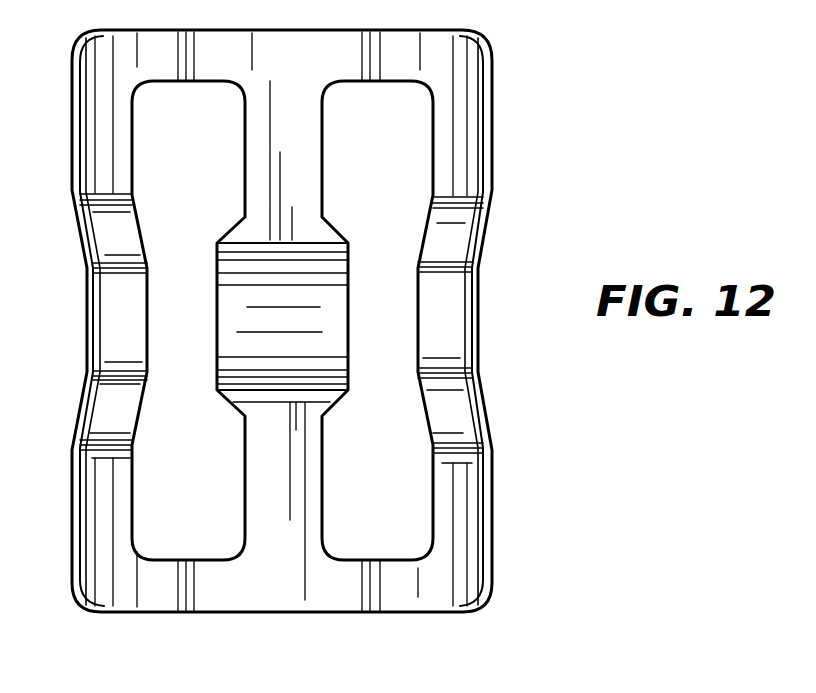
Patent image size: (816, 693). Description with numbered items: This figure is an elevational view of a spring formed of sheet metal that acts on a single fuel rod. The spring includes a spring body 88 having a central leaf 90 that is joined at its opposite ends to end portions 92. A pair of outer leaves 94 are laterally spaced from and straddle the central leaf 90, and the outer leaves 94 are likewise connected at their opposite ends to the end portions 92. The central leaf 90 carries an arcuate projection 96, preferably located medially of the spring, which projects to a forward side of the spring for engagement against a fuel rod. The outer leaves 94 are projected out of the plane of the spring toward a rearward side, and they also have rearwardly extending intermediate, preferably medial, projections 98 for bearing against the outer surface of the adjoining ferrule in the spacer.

The spring body 88 is at (492, 107).
The central leaf 90 is at (280, 152).
The end portions 92 is at (240, 593).
The outer leaves 94 is at (457, 157).
The arcuate projection 96 is at (233, 320).
The medial projections 98 is at (110, 315).